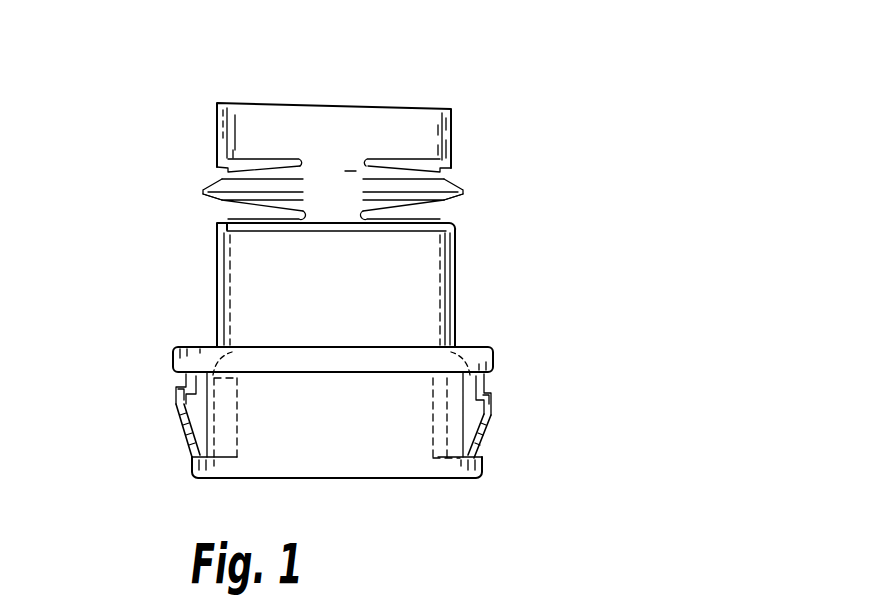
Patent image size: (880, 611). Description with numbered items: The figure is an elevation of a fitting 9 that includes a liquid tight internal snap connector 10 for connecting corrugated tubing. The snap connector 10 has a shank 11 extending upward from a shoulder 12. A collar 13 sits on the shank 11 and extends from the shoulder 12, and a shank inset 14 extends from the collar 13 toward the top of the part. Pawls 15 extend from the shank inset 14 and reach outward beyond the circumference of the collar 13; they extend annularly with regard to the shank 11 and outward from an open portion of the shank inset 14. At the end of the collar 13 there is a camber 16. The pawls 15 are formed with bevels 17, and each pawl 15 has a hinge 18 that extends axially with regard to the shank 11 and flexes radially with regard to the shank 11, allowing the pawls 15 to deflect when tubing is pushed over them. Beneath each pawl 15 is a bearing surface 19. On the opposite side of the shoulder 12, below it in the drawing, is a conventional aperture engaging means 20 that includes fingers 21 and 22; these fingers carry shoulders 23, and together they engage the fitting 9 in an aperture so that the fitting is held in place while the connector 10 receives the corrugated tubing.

The fitting 9 is at (193, 316).
The liquid tight internal snap connector 10 is at (459, 290).
The shank 11 is at (338, 146).
The shoulder 12 is at (484, 352).
The collar 13 is at (458, 312).
The shank inset 14 is at (452, 133).
The pawls 15 is at (204, 184).
The camber 16 is at (216, 222).
The bevels 17 is at (455, 183).
The hinges 18 is at (303, 182).
The bearing surfaces 19 is at (205, 203).
The aperture engaging means 20 is at (395, 445).
The finger 21 is at (490, 440).
The finger 22 is at (184, 432).
The shoulders 23 is at (180, 392).